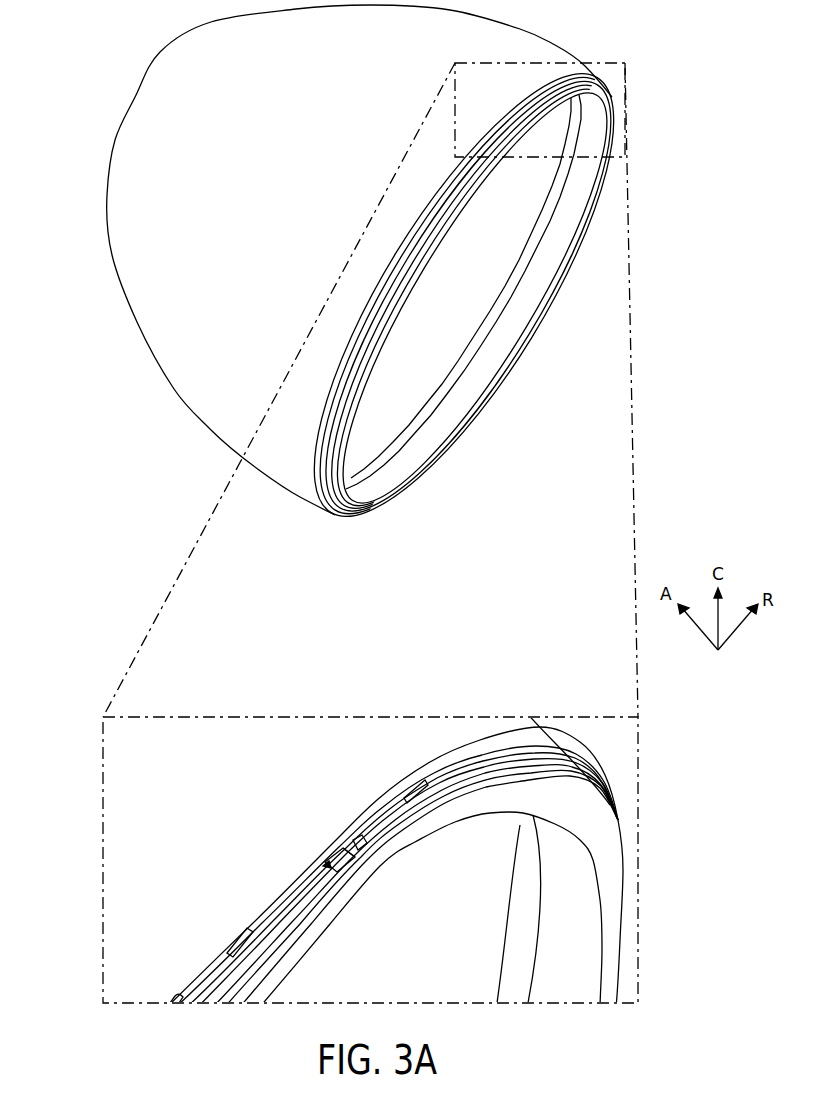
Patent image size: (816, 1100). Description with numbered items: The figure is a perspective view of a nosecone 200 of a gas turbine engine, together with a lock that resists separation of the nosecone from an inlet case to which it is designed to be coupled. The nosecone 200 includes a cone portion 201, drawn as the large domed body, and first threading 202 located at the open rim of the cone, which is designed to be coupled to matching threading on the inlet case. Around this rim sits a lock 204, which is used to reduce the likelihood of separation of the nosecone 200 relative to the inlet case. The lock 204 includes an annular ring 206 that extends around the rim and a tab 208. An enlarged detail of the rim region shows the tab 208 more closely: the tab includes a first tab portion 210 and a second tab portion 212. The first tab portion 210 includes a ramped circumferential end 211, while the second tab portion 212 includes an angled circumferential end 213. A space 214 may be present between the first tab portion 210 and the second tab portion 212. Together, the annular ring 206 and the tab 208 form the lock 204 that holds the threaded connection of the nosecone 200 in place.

The nosecone 200 is at (92, 68).
The cone portion 201 is at (135, 145).
The first threading 202 is at (530, 313).
The lock 204 is at (514, 113).
The annular ring 206 is at (364, 340).
The tab 208 is at (330, 841).
The first tab portion 210 is at (363, 832).
The ramped circumferential end 211 is at (377, 833).
The second tab portion 212 is at (340, 860).
The angled circumferential end 213 is at (327, 866).
The space 214 is at (352, 852).